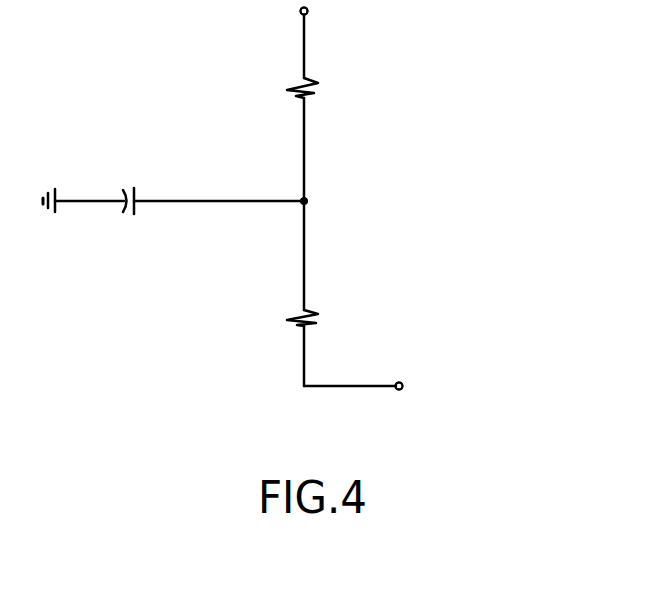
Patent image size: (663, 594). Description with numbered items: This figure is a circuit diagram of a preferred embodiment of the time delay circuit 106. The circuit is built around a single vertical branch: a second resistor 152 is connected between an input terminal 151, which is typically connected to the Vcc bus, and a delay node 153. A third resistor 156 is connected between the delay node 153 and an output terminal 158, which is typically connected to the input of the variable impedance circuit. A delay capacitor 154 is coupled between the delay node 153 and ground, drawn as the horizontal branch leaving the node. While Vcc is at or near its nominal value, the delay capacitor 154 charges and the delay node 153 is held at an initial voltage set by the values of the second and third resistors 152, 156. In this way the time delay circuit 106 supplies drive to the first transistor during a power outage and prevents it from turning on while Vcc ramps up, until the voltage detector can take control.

The time delay circuit 106 is at (458, 193).
The input terminal 151 is at (304, 52).
The second resistor 152 is at (306, 82).
The delay node 153 is at (306, 200).
The delay capacitor 154 is at (135, 206).
The third resistor 156 is at (306, 311).
The output terminal 158 is at (371, 387).